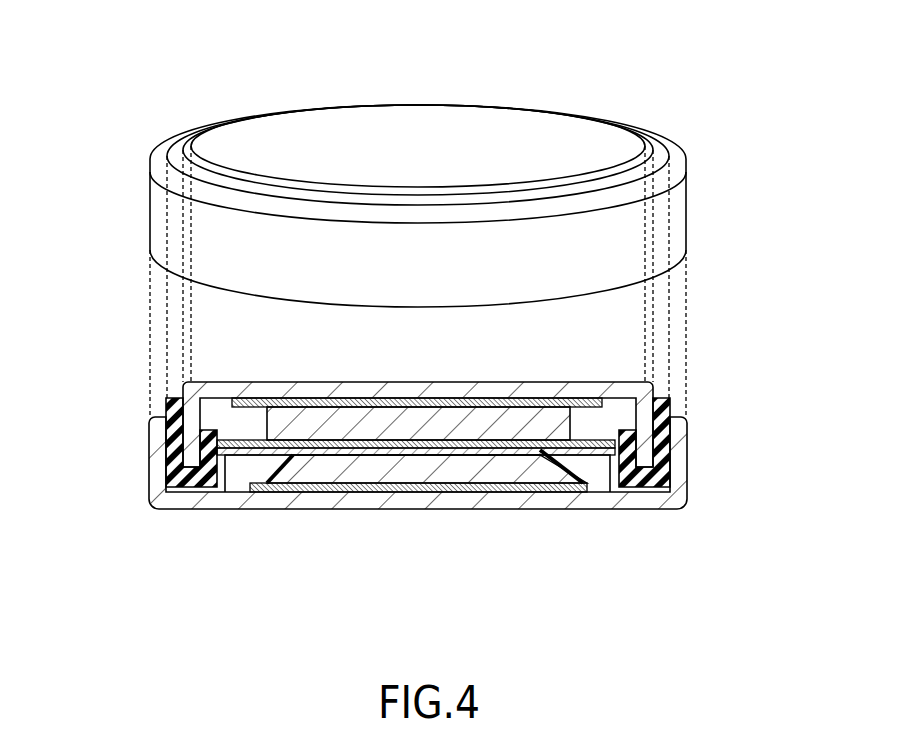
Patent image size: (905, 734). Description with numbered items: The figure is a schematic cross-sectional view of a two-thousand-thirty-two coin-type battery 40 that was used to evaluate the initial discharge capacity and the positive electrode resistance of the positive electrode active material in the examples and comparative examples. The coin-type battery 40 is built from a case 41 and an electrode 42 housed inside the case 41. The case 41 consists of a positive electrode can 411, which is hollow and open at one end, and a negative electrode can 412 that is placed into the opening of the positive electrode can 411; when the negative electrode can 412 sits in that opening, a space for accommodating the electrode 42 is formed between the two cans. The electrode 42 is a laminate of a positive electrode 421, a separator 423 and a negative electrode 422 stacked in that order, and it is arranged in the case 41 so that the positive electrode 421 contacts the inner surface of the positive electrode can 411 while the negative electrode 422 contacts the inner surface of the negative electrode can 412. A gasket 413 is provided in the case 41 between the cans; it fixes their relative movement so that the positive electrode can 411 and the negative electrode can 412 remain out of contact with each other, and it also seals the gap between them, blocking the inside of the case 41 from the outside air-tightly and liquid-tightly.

The coin-type battery 40 is at (148, 22).
The case 41 is at (452, 310).
The positive electrode can 411 is at (680, 217).
The negative electrode can 412 is at (588, 138).
The gasket 413 is at (177, 148).
The electrode 42 is at (435, 521).
The positive electrode 421 is at (417, 520).
The negative electrode 422 is at (562, 420).
The separator 423 is at (508, 448).